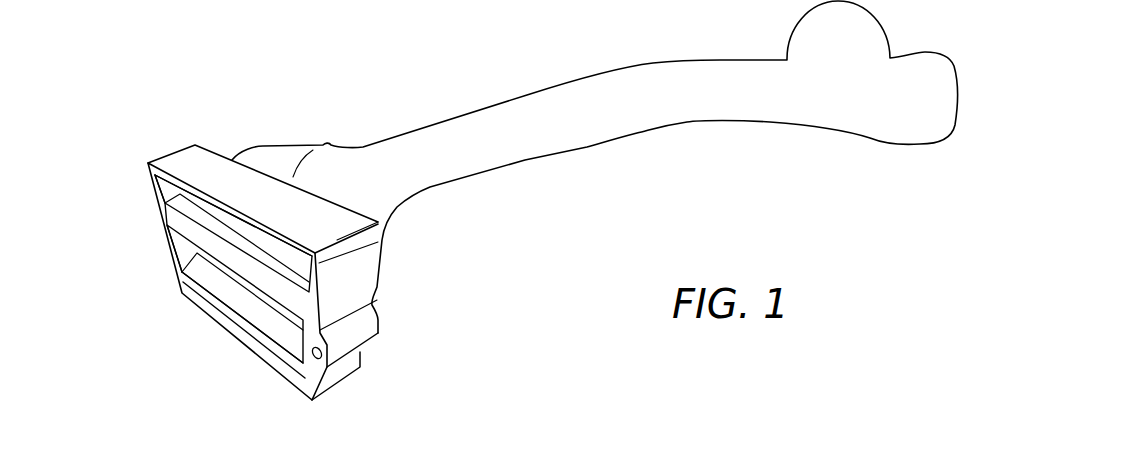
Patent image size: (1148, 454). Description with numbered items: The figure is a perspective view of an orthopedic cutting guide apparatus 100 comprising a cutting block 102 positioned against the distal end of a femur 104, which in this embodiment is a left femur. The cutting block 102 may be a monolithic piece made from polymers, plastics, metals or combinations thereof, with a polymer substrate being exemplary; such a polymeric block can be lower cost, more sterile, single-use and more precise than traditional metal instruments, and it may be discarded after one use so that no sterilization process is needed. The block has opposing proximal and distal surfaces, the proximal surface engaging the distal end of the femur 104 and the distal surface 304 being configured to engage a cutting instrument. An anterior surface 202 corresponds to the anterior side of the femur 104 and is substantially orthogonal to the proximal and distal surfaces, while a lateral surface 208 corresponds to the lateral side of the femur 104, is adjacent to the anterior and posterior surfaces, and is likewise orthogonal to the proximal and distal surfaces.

The orthopedic cutting guide apparatus 100 is at (148, 125).
The cutting block 102 is at (231, 336).
The femur 104 is at (524, 96).
The anterior surface 202 is at (218, 167).
The lateral surface 208 is at (357, 275).
The distal surface 304 is at (197, 230).